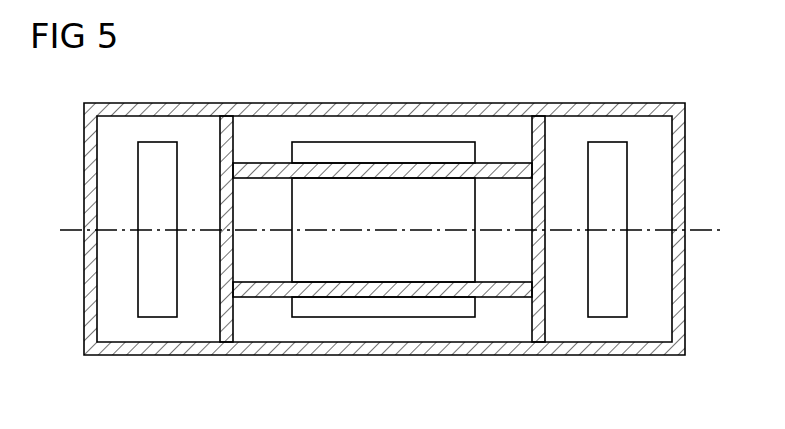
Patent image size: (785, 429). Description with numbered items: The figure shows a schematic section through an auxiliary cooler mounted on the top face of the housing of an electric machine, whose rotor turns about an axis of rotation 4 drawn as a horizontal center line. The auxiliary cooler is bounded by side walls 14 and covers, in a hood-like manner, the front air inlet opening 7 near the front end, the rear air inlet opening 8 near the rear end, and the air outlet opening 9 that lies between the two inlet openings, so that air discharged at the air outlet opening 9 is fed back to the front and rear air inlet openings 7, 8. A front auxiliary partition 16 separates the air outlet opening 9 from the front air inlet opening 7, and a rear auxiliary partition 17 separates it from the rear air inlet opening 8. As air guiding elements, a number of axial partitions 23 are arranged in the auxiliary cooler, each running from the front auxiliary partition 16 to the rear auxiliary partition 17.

The axis of rotation 4 is at (708, 230).
The front air inlet opening 7 is at (163, 192).
The rear air inlet opening 8 is at (588, 187).
The air outlet opening 9 is at (465, 203).
The side walls 14 is at (618, 112).
The front auxiliary partition 16 is at (243, 116).
The rear auxiliary partition 17 is at (533, 132).
The axial partitions 23 is at (383, 162).